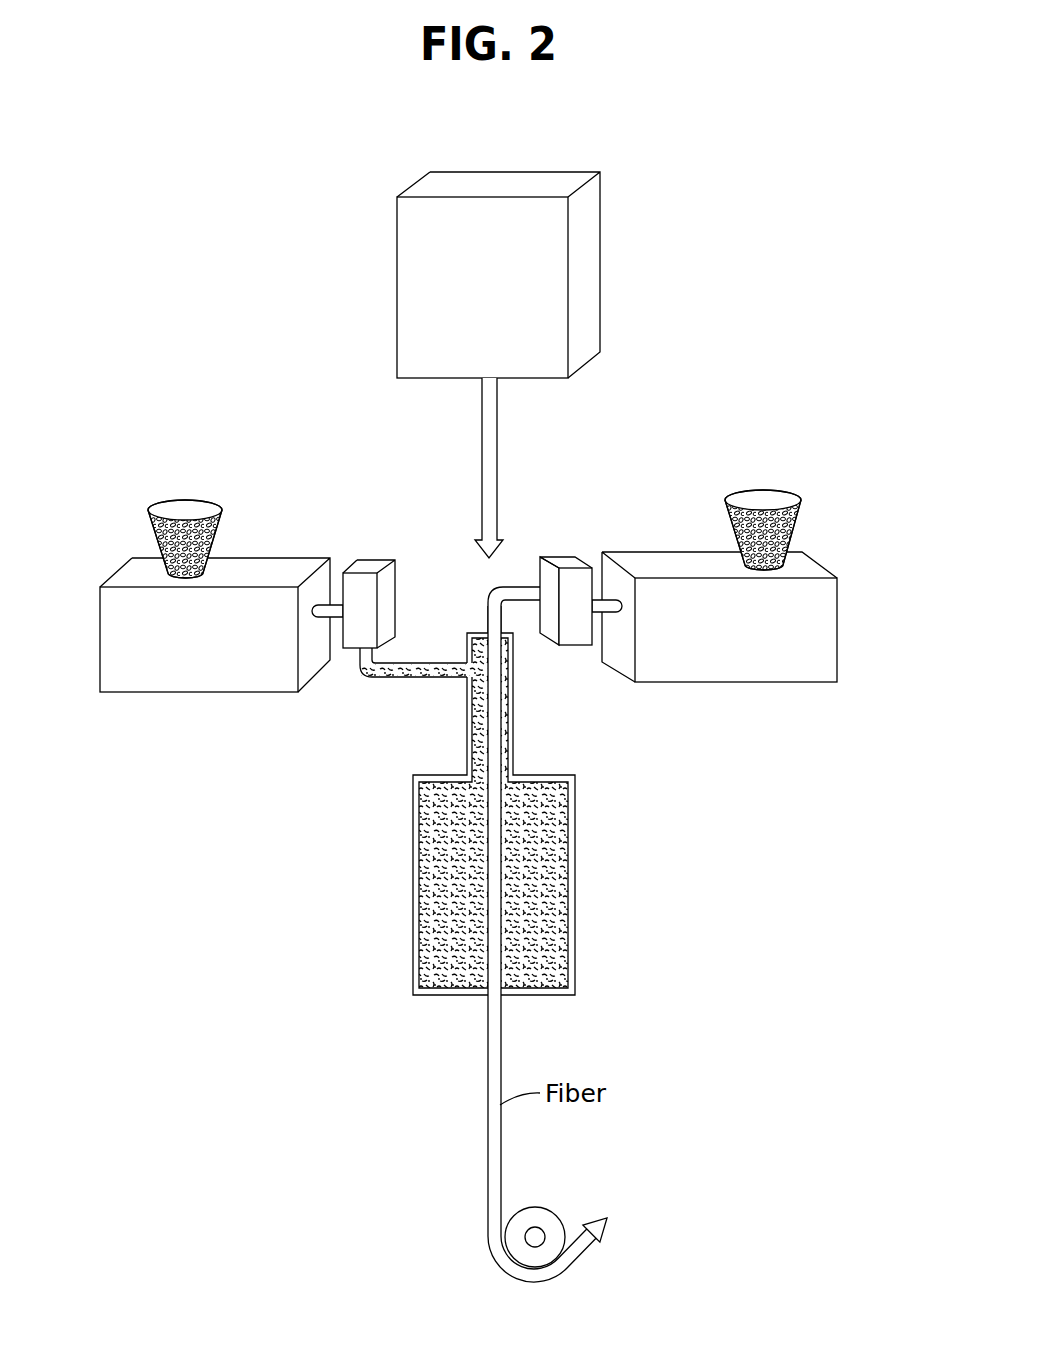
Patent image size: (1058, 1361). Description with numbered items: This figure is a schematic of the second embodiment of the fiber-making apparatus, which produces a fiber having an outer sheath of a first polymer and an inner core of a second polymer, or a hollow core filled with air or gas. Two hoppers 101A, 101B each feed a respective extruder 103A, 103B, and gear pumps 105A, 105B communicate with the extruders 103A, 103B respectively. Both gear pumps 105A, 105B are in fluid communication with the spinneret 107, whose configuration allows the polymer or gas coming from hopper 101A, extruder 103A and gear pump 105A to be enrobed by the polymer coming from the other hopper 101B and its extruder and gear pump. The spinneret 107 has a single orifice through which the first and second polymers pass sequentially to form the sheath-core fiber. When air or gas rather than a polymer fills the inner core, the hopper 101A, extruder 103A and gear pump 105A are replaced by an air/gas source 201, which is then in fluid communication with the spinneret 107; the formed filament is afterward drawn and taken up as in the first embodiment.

The air/gas source 201 is at (588, 232).
The hopper 101A is at (802, 512).
The hopper 101B is at (148, 521).
The extruder 103A is at (823, 633).
The extruder 103B is at (192, 680).
The gear pump 105A is at (565, 558).
The gear pump 105B is at (367, 558).
The spinneret 107 is at (395, 845).